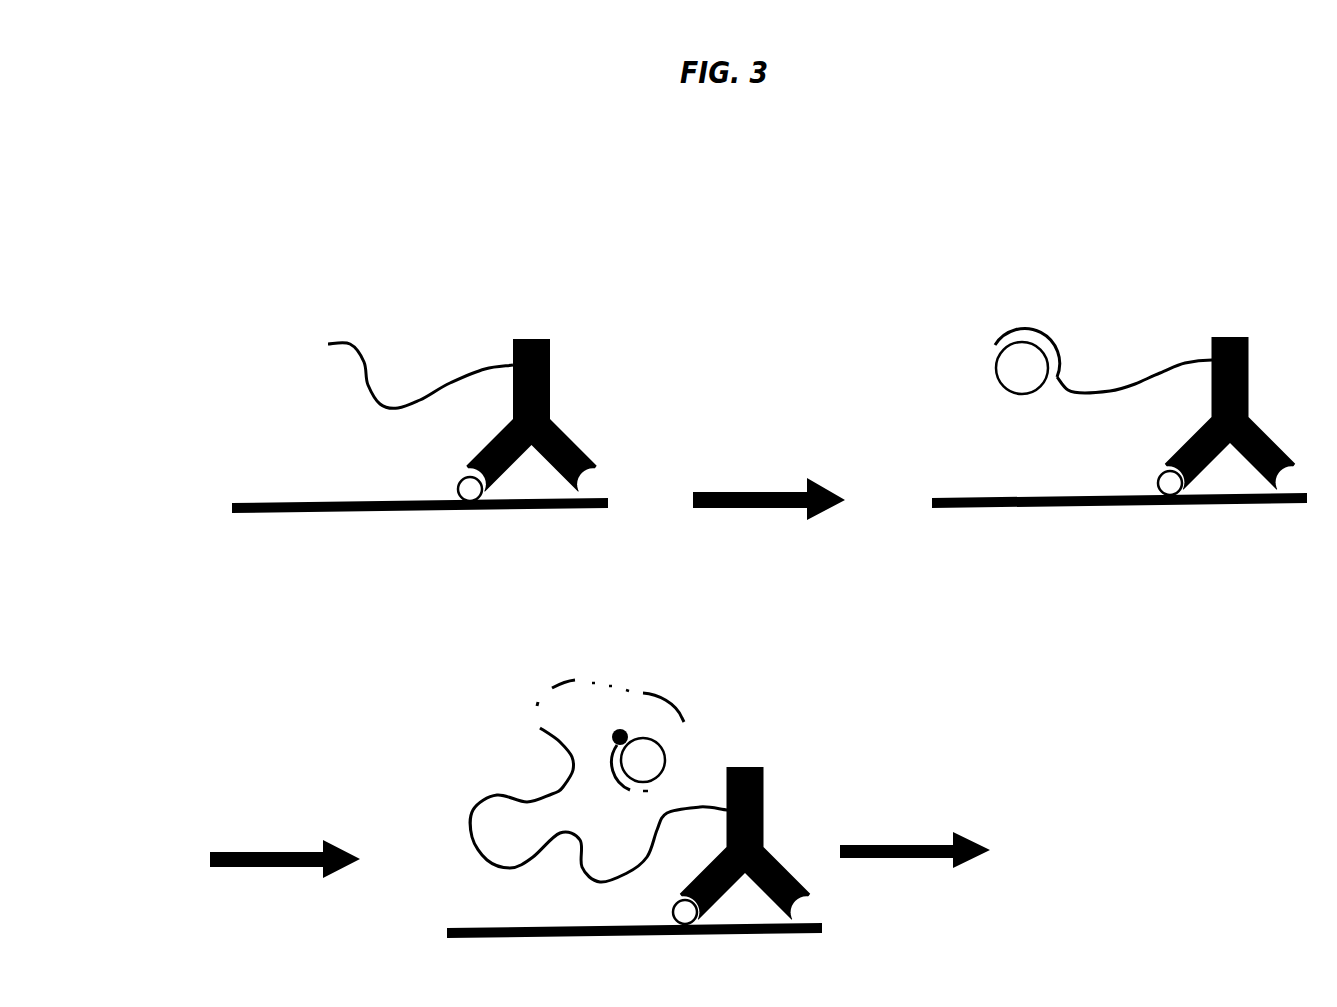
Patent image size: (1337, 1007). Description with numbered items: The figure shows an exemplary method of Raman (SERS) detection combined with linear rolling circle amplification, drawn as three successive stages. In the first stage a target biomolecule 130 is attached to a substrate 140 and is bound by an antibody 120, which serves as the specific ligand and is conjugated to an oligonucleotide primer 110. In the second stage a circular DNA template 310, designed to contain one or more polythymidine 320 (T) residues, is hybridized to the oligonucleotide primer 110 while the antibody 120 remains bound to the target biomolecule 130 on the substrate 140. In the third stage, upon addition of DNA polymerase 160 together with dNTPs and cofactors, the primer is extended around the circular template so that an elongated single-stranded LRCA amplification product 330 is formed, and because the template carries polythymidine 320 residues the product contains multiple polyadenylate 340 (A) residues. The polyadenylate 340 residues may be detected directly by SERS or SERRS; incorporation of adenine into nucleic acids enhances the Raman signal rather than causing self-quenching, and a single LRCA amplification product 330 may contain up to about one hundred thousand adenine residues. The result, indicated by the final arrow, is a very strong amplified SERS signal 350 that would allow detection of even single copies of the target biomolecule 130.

The oligonucleotide primer 110 is at (316, 345).
The antibody 120 is at (556, 378).
The target biomolecule 130 is at (450, 485).
The substrate 140 is at (228, 508).
The circular DNA template 310 is at (1022, 368).
The polythymidine residues 320 is at (979, 359).
The LRCA amplification product 330 is at (469, 803).
The polyadenylate residues 340 is at (536, 688).
The DNA polymerase 160 is at (613, 731).
The amplified SERS signal 350 is at (1133, 843).